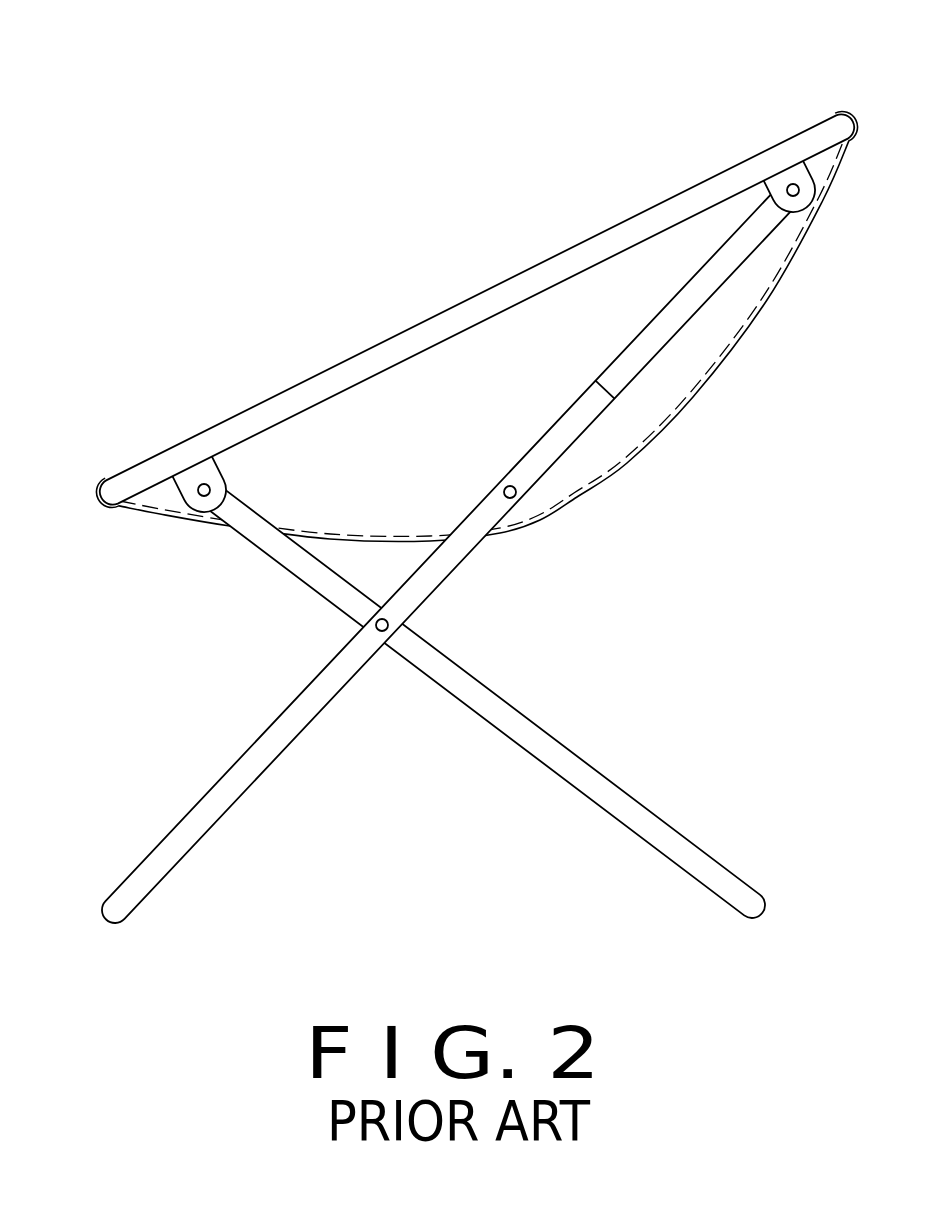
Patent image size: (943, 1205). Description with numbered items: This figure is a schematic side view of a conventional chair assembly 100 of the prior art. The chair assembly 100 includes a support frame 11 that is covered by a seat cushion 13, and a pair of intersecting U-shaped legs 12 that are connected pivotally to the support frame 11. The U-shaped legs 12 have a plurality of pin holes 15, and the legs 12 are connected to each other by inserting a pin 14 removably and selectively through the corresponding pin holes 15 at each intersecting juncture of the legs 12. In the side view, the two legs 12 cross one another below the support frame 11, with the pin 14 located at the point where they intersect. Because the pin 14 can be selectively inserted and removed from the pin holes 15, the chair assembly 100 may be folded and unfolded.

The chair assembly 100 is at (445, 227).
The support frame 11 is at (158, 473).
The U-shaped legs 12 is at (283, 732).
The seat cushion 13 is at (163, 522).
The pin 14 is at (393, 637).
The pin holes 15 is at (518, 492).